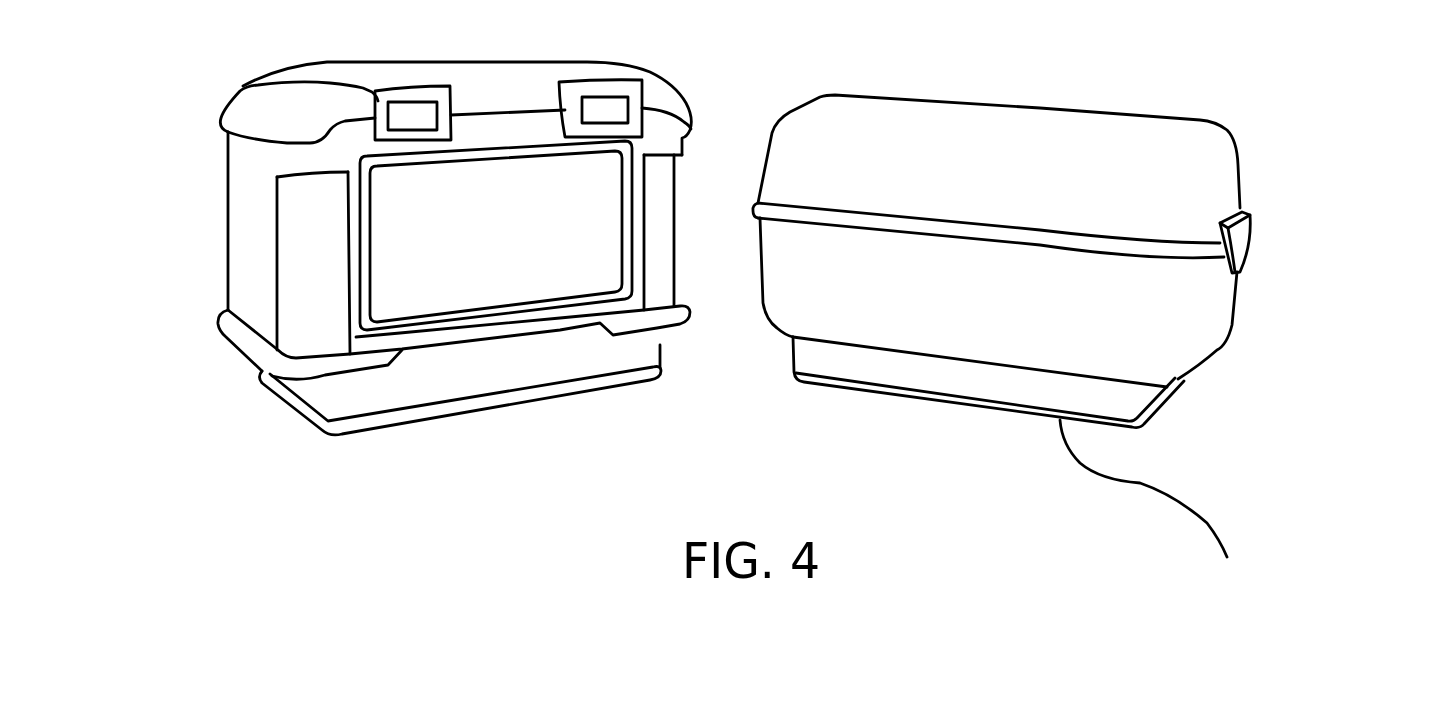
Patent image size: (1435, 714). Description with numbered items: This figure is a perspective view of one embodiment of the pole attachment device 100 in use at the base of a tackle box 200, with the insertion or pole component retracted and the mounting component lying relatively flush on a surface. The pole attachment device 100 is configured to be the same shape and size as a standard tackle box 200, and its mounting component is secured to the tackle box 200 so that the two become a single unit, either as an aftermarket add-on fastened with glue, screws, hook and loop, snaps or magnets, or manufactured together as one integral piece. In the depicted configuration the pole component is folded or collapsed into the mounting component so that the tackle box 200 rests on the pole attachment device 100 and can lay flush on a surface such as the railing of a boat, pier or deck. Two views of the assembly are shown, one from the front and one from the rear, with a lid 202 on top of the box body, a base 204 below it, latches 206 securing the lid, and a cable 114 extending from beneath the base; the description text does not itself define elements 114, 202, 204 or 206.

The pole attachment device 100 is at (252, 412).
The cable 114 is at (1158, 504).
The tackle box 200 is at (1197, 295).
The lid 202 is at (1207, 127).
The base 204 is at (1170, 370).
The latch 206 is at (248, 87).